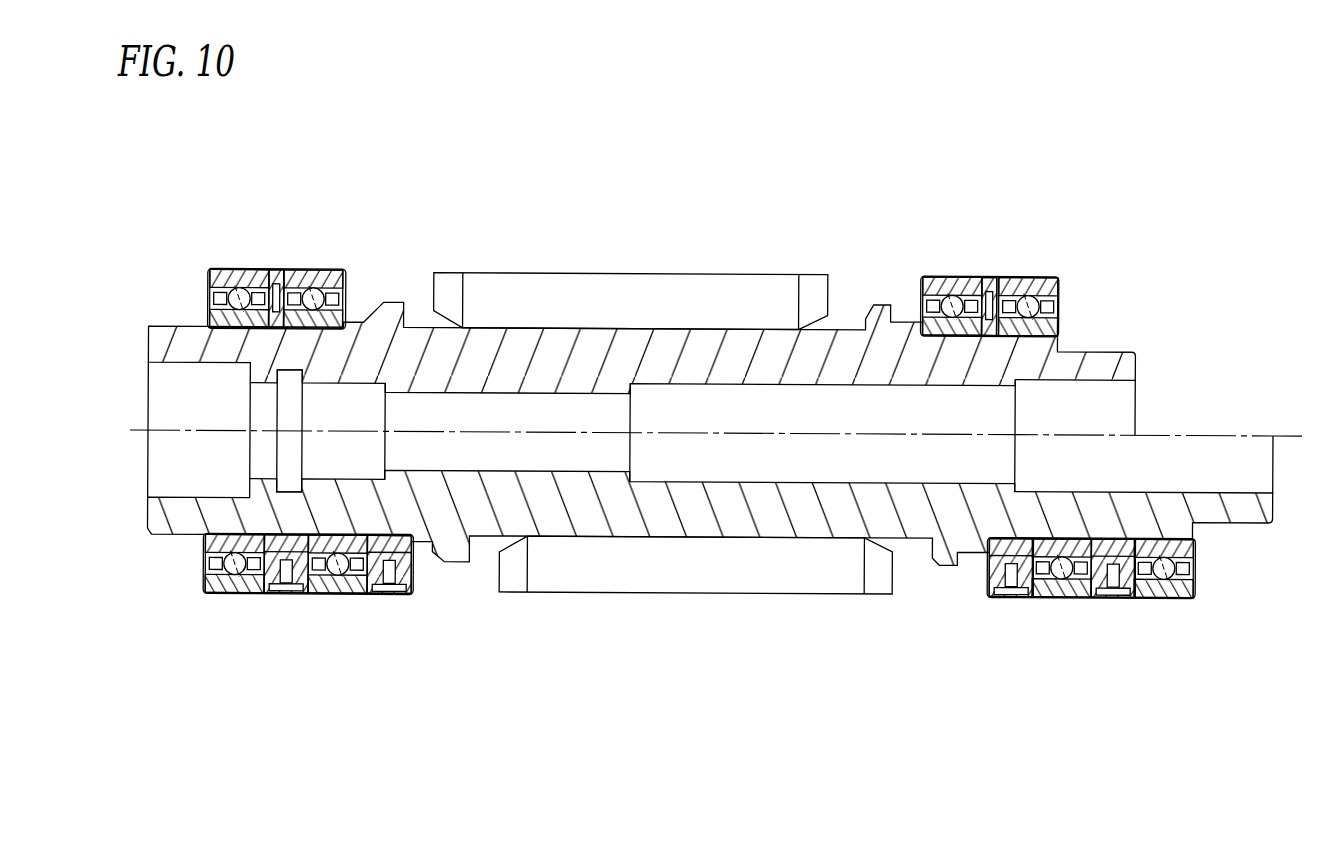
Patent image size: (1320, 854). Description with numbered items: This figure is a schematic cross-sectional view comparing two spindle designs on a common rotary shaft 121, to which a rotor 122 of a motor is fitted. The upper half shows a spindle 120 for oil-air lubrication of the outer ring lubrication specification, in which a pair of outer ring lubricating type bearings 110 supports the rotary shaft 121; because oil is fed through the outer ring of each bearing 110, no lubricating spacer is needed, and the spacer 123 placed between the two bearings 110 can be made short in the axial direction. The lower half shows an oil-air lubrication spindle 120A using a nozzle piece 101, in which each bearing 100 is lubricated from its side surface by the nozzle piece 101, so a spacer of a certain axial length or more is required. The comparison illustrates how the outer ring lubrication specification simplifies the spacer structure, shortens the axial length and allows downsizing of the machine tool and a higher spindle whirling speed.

The bearing 100 is at (235, 605).
The nozzle piece 101 is at (284, 605).
The outer ring lubricating type bearing 110 is at (246, 266).
The spindle 120 is at (1075, 240).
The oil-air lubrication spindle 120A is at (1076, 662).
The rotary shaft 121 is at (642, 360).
The rotor 122 is at (713, 566).
The spacer 123 is at (279, 286).